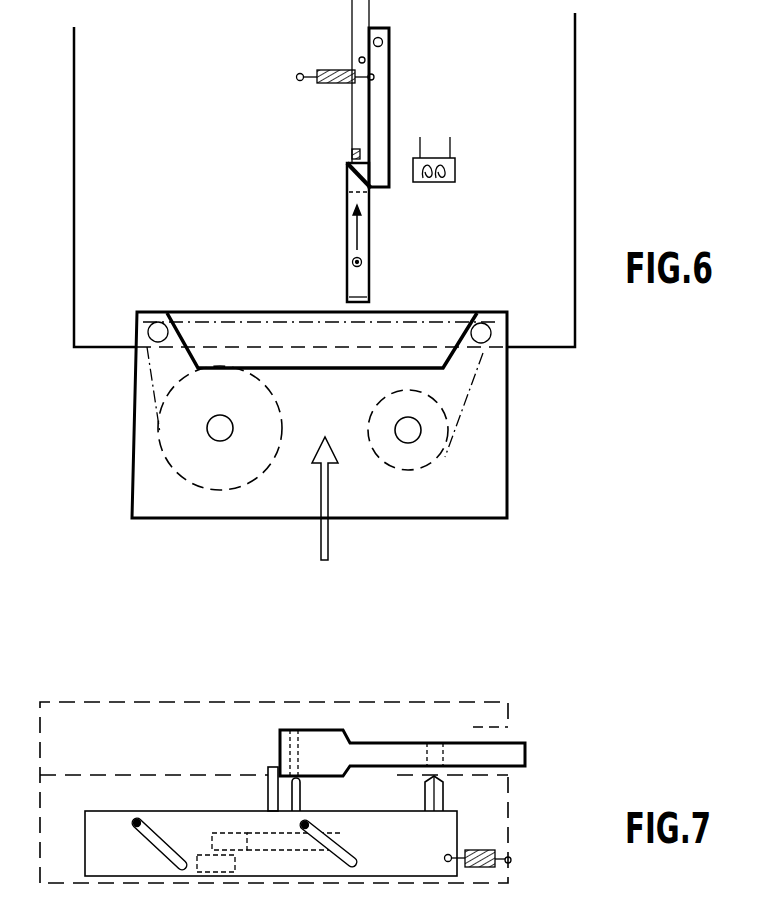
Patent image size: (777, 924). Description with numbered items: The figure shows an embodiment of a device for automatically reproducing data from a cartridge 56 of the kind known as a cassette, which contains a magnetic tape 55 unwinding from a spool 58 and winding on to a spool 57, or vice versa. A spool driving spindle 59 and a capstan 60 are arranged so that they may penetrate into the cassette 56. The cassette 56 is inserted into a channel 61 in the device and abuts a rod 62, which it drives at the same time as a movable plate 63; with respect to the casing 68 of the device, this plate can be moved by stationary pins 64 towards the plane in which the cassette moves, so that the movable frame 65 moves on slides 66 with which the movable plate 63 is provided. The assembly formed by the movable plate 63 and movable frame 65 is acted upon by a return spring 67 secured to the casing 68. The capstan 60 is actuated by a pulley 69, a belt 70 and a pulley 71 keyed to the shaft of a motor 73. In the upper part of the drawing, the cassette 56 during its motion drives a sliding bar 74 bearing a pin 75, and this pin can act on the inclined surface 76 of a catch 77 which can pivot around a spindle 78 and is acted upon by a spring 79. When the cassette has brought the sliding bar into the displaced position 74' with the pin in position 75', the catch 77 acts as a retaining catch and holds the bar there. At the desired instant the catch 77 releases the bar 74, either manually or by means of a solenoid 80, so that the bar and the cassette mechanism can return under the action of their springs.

In FIG. 6, the magnetic tape 55 is at (463, 403).
In FIG. 6, the cartridge 56 is at (490, 470).
In FIG. 7, the cartridge 56 is at (523, 755).
In FIG. 6, the spool 57 is at (415, 458).
In FIG. 6, the spool 58 is at (243, 472).
In FIG. 7, the spool driving spindle 59 is at (443, 795).
In FIG. 7, the capstan 60 is at (298, 792).
In FIG. 7, the channel 61 is at (498, 732).
In FIG. 7, the rod 62 is at (268, 770).
In FIG. 7, the movable plate 63 is at (117, 810).
In FIG. 7, the stationary pins 64 is at (140, 832).
In FIG. 7, the movable frame 65 is at (95, 827).
In FIG. 7, the slides 66 is at (152, 837).
In FIG. 7, the return spring 67 is at (490, 847).
In FIG. 7, the casing 68 is at (375, 703).
In FIG. 7, the pulley 69 is at (340, 837).
In FIG. 7, the belt 70 is at (233, 833).
In FIG. 7, the pulley 71 is at (212, 842).
In FIG. 7, the motor 73 is at (235, 867).
In FIG. 6, the sliding bar 74 is at (332, 232).
In FIG. 6, the sliding bar position 74' is at (325, 81).
In FIG. 6, the pin 75 is at (391, 261).
In FIG. 6, the pin position 75' is at (321, 142).
In FIG. 6, the inclined surface 76 is at (352, 180).
In FIG. 6, the catch 77 is at (378, 100).
In FIG. 6, the spindle 78 is at (385, 40).
In FIG. 6, the spring 79 is at (330, 70).
In FIG. 6, the solenoid 80 is at (435, 183).